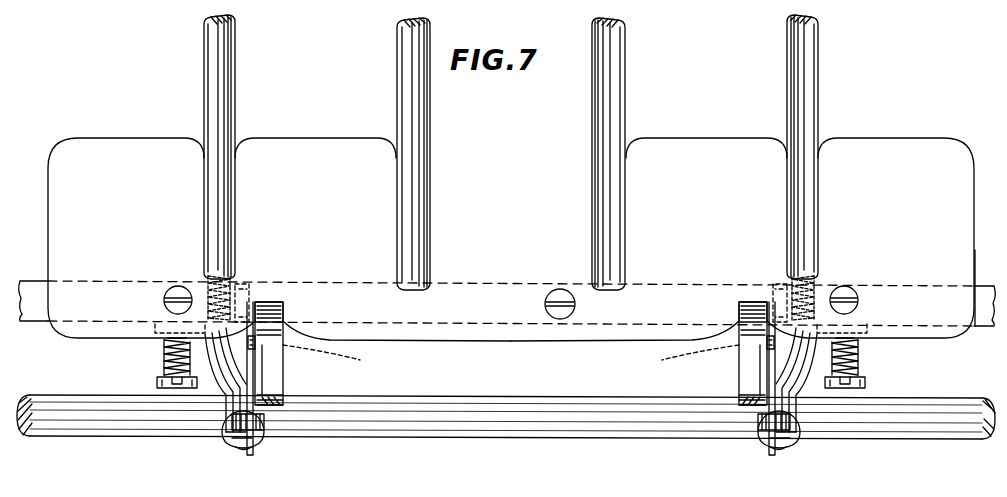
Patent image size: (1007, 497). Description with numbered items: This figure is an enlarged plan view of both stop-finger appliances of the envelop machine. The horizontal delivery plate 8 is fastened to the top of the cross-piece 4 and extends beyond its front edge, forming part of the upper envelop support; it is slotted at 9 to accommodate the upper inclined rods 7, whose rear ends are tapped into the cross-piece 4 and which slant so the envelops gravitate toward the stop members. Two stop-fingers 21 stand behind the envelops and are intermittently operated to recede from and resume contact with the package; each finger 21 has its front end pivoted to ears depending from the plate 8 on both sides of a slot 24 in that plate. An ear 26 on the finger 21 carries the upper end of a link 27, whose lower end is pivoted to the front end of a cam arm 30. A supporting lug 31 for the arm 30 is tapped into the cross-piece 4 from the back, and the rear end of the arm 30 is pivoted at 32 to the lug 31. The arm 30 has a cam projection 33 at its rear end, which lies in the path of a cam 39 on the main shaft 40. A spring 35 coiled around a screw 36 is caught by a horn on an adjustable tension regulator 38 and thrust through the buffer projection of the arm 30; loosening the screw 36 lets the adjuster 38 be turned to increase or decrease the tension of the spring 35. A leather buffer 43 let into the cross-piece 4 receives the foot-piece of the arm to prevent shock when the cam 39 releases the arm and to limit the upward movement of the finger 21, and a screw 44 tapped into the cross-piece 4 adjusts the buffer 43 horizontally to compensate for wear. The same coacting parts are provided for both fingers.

The cross-piece 4 is at (980, 295).
The inclined rods 7 is at (412, 70).
The delivery plate 8 is at (507, 303).
The slots 9 is at (400, 202).
The stop-fingers 21 is at (275, 382).
The slot 24 is at (282, 303).
The ear 26 is at (256, 344).
The link 27 is at (511, 355).
The cam arm 30 is at (264, 430).
The supporting lug 31 is at (232, 410).
The pivot 32 is at (240, 432).
The cam projection 33 is at (262, 430).
The spring 35 is at (164, 358).
The screw 36 is at (160, 380).
The adjustable lug or tension regulator 38 is at (888, 296).
The cam 39 is at (243, 448).
The main shaft 40 is at (515, 440).
The buffer 43 is at (245, 300).
The screw 44 is at (240, 290).